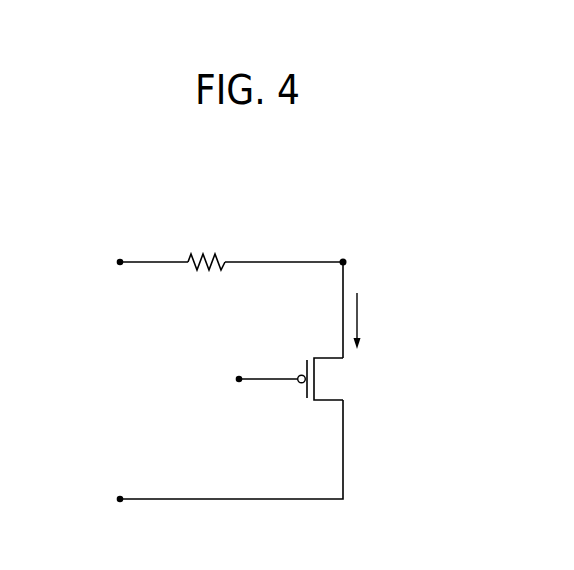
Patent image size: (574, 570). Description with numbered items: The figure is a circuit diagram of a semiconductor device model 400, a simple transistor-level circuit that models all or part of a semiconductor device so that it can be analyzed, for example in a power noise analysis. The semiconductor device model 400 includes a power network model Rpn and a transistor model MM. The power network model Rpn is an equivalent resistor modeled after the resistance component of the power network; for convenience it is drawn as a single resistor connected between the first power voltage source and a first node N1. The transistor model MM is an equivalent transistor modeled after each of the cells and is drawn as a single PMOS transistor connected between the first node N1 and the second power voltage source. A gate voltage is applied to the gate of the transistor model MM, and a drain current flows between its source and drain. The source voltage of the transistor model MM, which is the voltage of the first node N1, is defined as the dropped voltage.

The semiconductor device model 400 is at (413, 192).
The power network model Rpn is at (206, 249).
The first node N1 is at (340, 265).
The transistor model MM is at (328, 379).